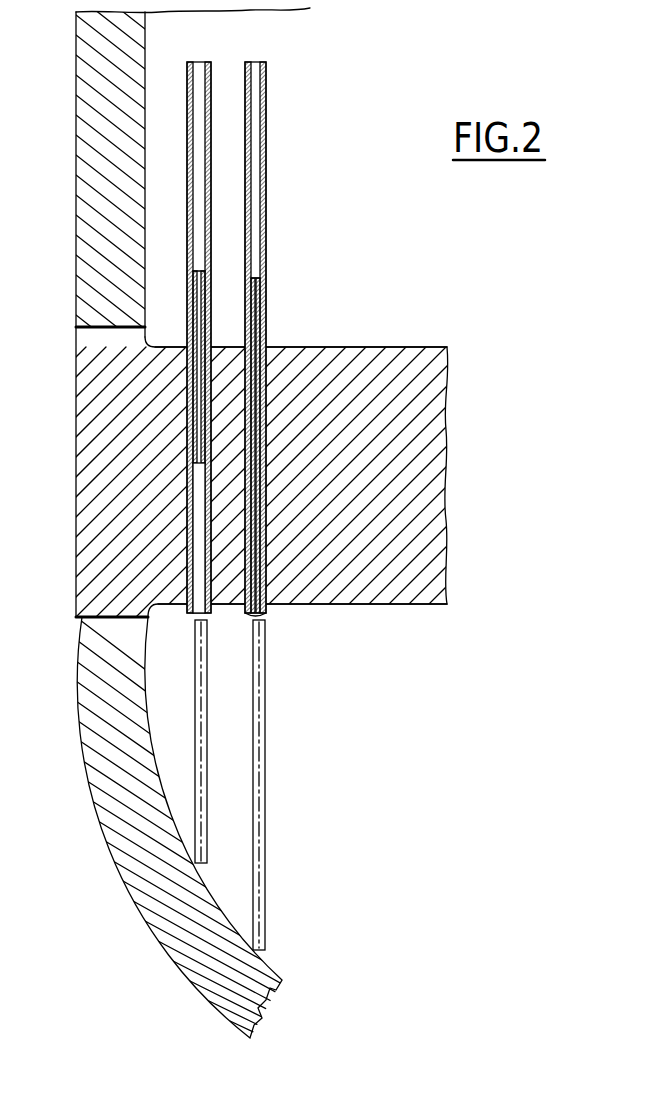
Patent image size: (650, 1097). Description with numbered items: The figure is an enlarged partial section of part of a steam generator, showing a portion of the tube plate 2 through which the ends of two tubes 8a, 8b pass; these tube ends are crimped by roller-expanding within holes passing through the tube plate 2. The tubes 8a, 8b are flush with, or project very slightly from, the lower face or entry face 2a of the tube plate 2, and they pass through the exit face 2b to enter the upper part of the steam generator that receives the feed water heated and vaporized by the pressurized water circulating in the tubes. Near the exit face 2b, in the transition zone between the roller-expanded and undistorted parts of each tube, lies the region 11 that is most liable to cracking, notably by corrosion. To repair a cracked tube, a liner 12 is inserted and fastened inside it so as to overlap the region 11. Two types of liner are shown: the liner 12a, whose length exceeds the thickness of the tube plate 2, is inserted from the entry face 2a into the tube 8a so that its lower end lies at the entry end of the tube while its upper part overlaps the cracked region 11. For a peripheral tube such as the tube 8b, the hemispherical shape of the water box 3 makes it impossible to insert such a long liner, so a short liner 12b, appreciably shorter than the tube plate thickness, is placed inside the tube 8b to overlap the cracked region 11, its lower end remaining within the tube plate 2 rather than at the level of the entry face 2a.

The tube plate 2 is at (400, 447).
The lower face (entry face) of the tube plate 2a is at (360, 604).
The exit face of the tube plate 2b is at (380, 347).
The water box 3 is at (105, 735).
The tube 8a is at (266, 85).
The tube 8b is at (211, 80).
The cracked region 11 is at (188, 305).
The liner 12 is at (197, 265).
The liner 12a is at (260, 772).
The short liner 12b is at (205, 773).